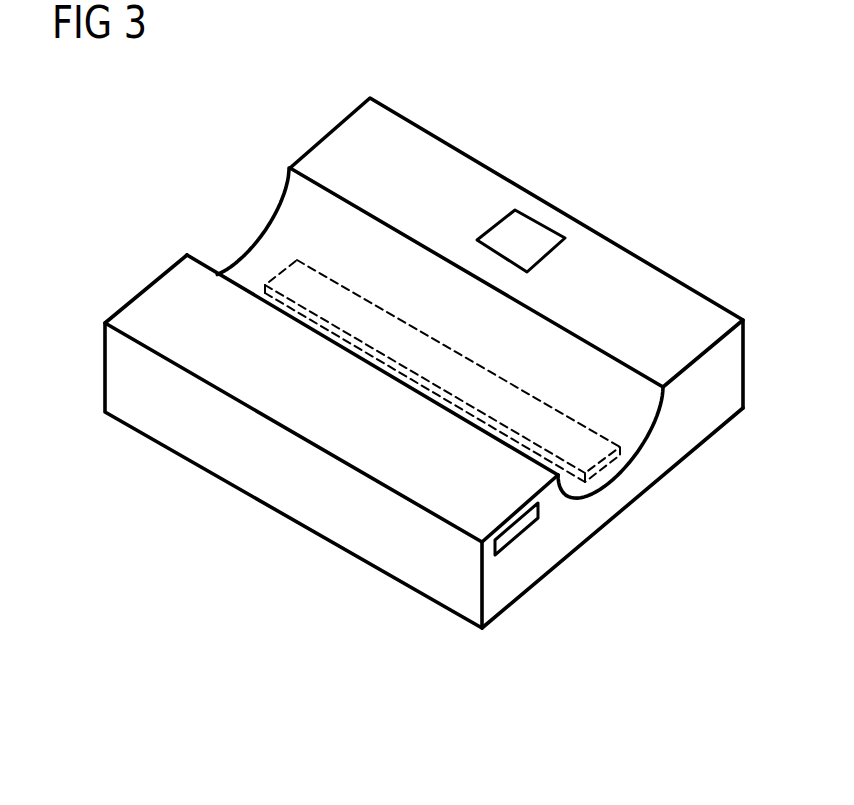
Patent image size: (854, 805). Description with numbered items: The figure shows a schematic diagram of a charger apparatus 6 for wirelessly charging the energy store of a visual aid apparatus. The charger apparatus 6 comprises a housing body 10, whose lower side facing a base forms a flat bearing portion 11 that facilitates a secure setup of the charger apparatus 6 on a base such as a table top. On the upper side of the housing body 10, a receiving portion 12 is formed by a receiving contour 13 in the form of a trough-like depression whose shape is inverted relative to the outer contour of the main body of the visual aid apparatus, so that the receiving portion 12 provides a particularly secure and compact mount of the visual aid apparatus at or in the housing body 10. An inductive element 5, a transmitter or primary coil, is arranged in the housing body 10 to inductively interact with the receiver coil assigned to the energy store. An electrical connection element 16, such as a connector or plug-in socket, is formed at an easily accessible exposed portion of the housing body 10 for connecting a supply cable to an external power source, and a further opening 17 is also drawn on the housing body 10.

The charger apparatus 6 is at (303, 120).
The inductive element 5 is at (292, 280).
The housing body 10 is at (425, 165).
The bearing portion 11 is at (250, 497).
The receiving portion 12 is at (243, 260).
The receiving contour 13 is at (612, 470).
The electrical connection element 16 is at (530, 232).
The slot 17 is at (513, 532).